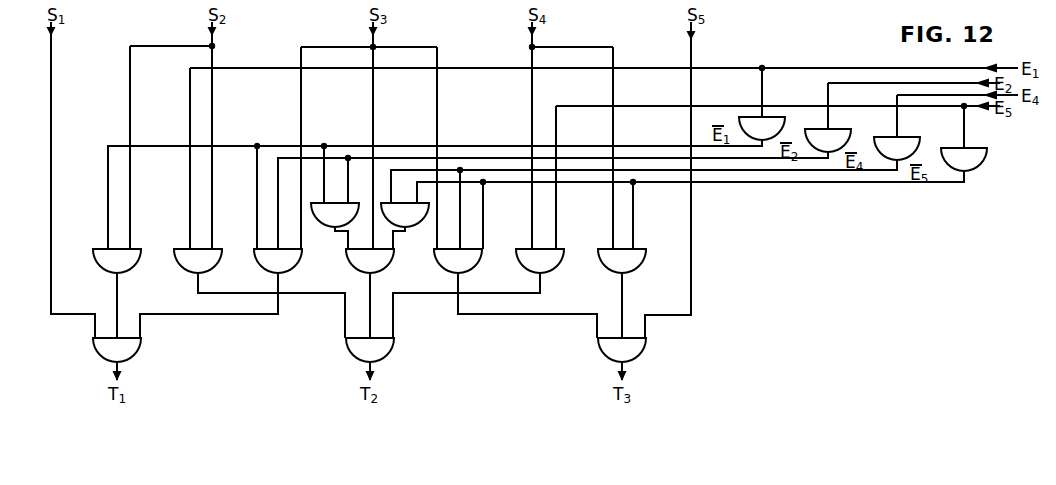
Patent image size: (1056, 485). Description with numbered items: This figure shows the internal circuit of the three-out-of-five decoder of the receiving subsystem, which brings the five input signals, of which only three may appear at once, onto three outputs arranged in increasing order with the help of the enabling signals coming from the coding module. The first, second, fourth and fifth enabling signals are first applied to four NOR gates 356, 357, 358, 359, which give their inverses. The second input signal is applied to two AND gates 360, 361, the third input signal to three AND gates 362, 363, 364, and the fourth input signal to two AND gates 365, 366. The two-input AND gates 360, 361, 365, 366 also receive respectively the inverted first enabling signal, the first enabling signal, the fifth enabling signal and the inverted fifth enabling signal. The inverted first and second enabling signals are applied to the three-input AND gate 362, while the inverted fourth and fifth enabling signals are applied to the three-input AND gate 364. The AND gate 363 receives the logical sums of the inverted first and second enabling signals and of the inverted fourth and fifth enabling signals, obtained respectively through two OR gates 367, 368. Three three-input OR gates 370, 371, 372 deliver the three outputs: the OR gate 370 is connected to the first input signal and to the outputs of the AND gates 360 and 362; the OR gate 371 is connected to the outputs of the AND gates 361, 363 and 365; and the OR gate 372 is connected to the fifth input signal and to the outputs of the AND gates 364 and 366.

The NOR gate 356 is at (746, 118).
The NOR gate 357 is at (820, 129).
The NOR gate 358 is at (888, 137).
The NOR gate 359 is at (981, 148).
The AND gate 360 is at (95, 252).
The AND gate 361 is at (177, 252).
The AND gate 362 is at (258, 252).
The AND gate 363 is at (348, 252).
The AND gate 364 is at (438, 252).
The AND gate 365 is at (519, 252).
The AND gate 366 is at (600, 252).
The OR gate 367 is at (321, 202).
The OR gate 368 is at (390, 202).
The OR gate 370 is at (141, 350).
The OR gate 371 is at (392, 350).
The OR gate 372 is at (643, 352).